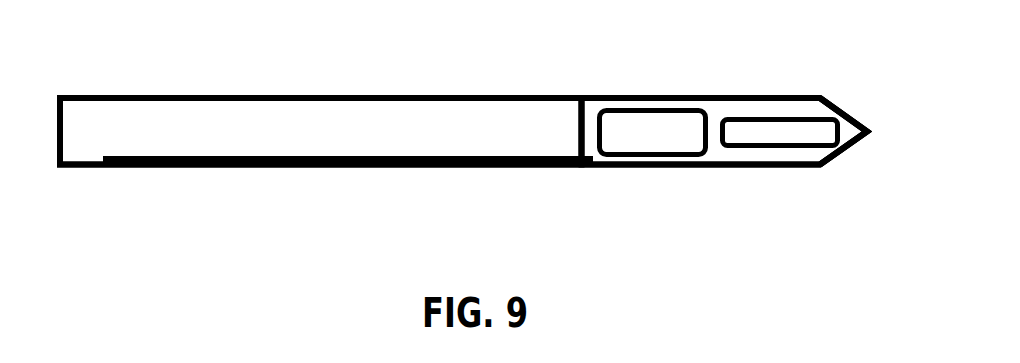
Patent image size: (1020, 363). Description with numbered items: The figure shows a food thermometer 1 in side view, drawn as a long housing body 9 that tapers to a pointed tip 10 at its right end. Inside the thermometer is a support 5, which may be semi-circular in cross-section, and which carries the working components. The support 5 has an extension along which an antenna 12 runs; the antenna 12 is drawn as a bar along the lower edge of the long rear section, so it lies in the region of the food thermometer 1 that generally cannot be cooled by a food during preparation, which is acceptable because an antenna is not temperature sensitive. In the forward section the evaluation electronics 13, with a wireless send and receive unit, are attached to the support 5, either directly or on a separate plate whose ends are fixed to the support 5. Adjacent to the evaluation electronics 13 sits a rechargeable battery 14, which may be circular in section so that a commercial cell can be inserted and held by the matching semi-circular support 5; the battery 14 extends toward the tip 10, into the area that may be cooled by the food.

The food thermometer 1 is at (105, 191).
The support 5 is at (717, 110).
The housing 9 is at (487, 97).
The tip 10 is at (867, 130).
The antenna 12 is at (350, 155).
The evaluation electronics 13 is at (670, 145).
The rechargeable battery 14 is at (773, 140).